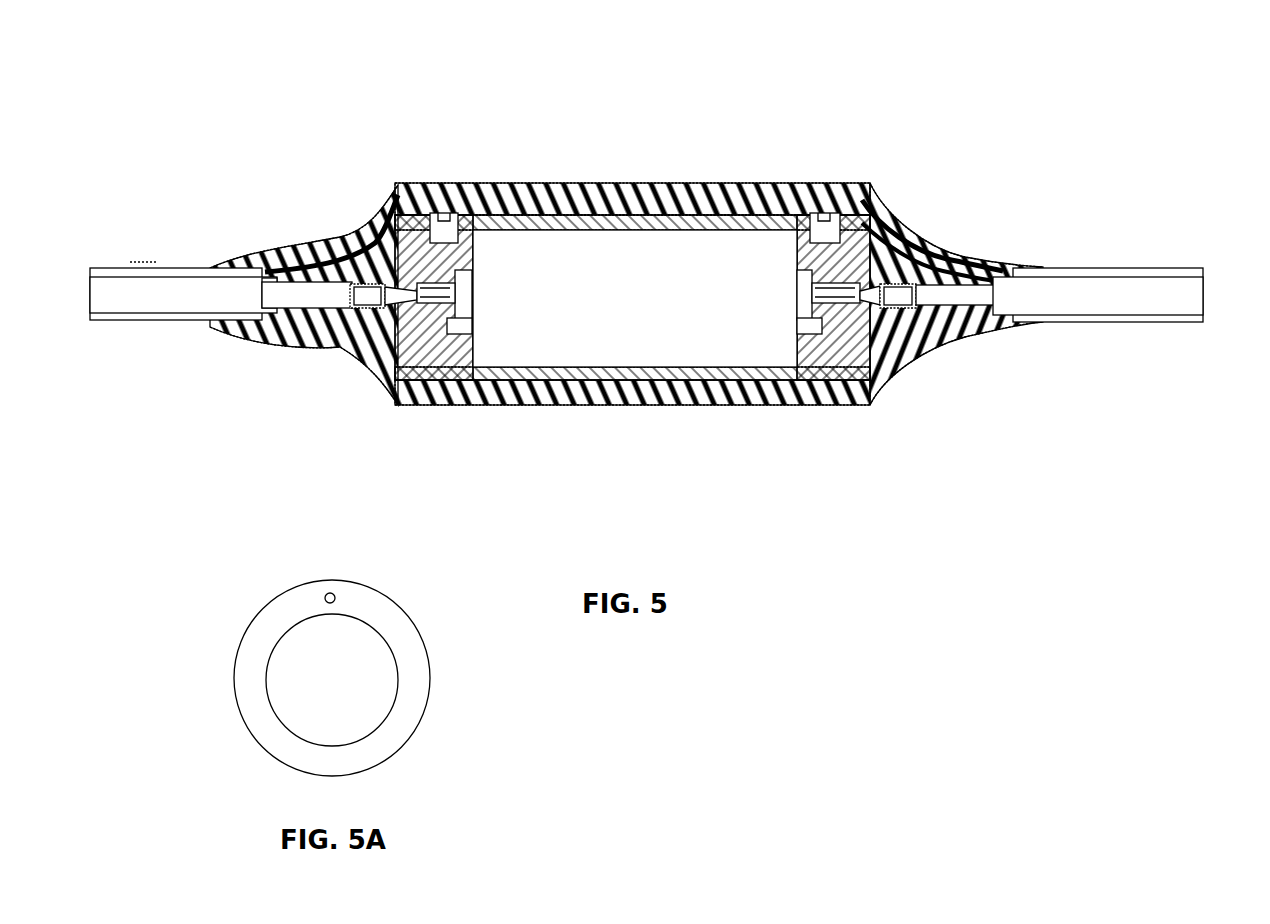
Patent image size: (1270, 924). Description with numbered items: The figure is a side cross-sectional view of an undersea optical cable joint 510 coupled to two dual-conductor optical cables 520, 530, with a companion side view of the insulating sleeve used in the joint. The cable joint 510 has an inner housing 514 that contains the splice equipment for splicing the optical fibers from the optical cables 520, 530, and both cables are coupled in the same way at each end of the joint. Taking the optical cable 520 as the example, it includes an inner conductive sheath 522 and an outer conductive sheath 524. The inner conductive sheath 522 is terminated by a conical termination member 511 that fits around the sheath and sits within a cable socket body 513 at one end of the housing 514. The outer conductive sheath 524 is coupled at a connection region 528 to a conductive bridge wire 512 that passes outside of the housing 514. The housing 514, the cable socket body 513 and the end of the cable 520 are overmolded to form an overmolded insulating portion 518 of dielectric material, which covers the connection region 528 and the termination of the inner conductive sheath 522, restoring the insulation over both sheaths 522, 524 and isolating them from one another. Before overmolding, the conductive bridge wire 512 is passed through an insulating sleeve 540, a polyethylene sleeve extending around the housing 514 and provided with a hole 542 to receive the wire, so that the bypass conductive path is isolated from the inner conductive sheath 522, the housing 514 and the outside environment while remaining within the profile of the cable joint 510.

In FIG. 5, the optical cable joint 510 is at (128, 74).
In FIG. 5, the conical termination member 511 is at (352, 280).
In FIG. 5, the conductive bridge wire 512 is at (491, 186).
In FIG. 5, the cable socket body 513 is at (472, 263).
In FIG. 5, the inner housing 514 is at (527, 384).
In FIG. 5, the overmolded insulating portion 518 is at (303, 328).
In FIG. 5, the optical cable 520 is at (100, 256).
In FIG. 5, the inner conductive sheath 522 is at (333, 305).
In FIG. 5, the outer conductive sheath 524 is at (127, 292).
In FIG. 5, the connection region 528 is at (265, 281).
In FIG. 5, the optical cable 530 is at (1197, 256).
In FIG. 5, the insulating sleeve 540 is at (600, 186).
In FIG. 5A, the insulating sleeve 540 is at (246, 694).
In FIG. 5A, the hole 542 is at (324, 598).